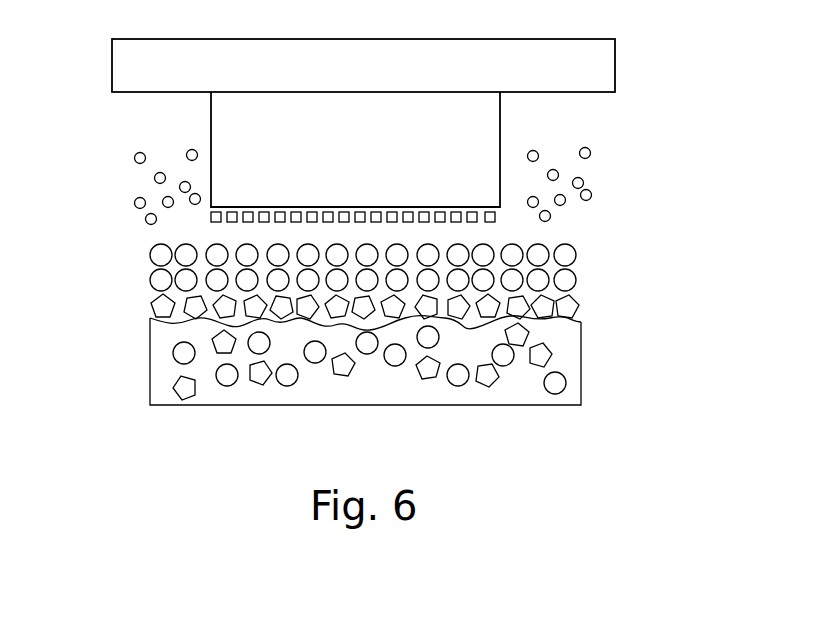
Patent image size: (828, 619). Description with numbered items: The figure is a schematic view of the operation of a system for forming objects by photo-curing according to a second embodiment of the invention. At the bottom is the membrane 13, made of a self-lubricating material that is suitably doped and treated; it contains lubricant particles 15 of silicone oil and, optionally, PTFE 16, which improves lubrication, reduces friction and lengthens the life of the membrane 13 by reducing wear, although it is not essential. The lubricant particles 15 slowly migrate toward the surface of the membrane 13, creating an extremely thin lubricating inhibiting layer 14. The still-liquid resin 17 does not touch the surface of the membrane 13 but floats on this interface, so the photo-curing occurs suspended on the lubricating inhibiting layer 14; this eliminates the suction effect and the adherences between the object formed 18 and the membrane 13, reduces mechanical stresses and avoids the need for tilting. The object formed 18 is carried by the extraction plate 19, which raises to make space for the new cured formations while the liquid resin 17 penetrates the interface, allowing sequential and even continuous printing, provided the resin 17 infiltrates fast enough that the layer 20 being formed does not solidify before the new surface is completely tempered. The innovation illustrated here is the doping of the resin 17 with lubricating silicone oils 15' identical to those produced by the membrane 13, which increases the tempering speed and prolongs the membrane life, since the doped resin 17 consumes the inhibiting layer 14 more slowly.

The membrane 13 is at (568, 357).
The lubricating inhibiting layer 14 is at (362, 349).
The lubricant particles 15 is at (329, 349).
The lubricating silicone oils 15' is at (621, 165).
The PTFE 16 is at (152, 305).
The resin 17 is at (573, 155).
The object formed 18 is at (381, 176).
The extraction plate 19 is at (382, 75).
The layer being formed 20 is at (212, 217).